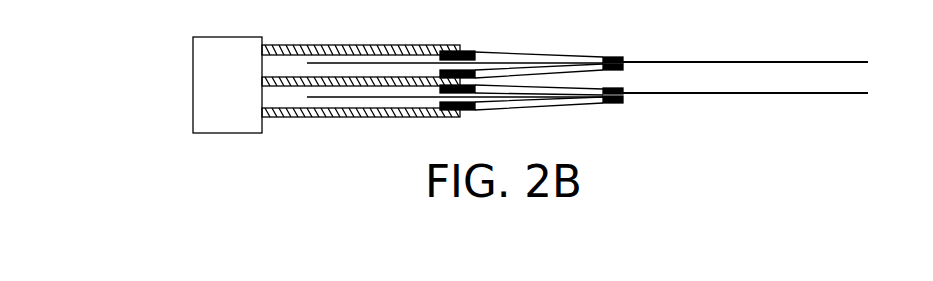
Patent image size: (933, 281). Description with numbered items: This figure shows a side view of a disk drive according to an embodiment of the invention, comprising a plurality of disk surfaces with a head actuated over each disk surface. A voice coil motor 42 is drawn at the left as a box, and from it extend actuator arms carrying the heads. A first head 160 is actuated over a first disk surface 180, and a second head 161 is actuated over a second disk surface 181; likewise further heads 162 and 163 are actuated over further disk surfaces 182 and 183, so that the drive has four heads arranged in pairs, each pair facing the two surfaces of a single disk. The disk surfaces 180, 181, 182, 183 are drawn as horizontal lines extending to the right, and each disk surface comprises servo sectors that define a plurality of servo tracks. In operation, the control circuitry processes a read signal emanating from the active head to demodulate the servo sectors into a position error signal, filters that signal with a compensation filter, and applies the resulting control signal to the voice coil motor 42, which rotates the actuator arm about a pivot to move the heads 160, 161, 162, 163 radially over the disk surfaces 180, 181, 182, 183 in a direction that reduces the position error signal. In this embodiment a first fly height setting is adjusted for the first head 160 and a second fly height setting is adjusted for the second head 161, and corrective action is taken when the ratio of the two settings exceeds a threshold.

The voice coil motor (VCM) 42 is at (225, 38).
The first head 160 is at (618, 57).
The second head 161 is at (636, 65).
The head 162 is at (636, 95).
The head 163 is at (618, 103).
The first disk surface 180 is at (762, 62).
The second disk surface 181 is at (818, 62).
The disk surface 182 is at (790, 93).
The disk surface 183 is at (808, 93).